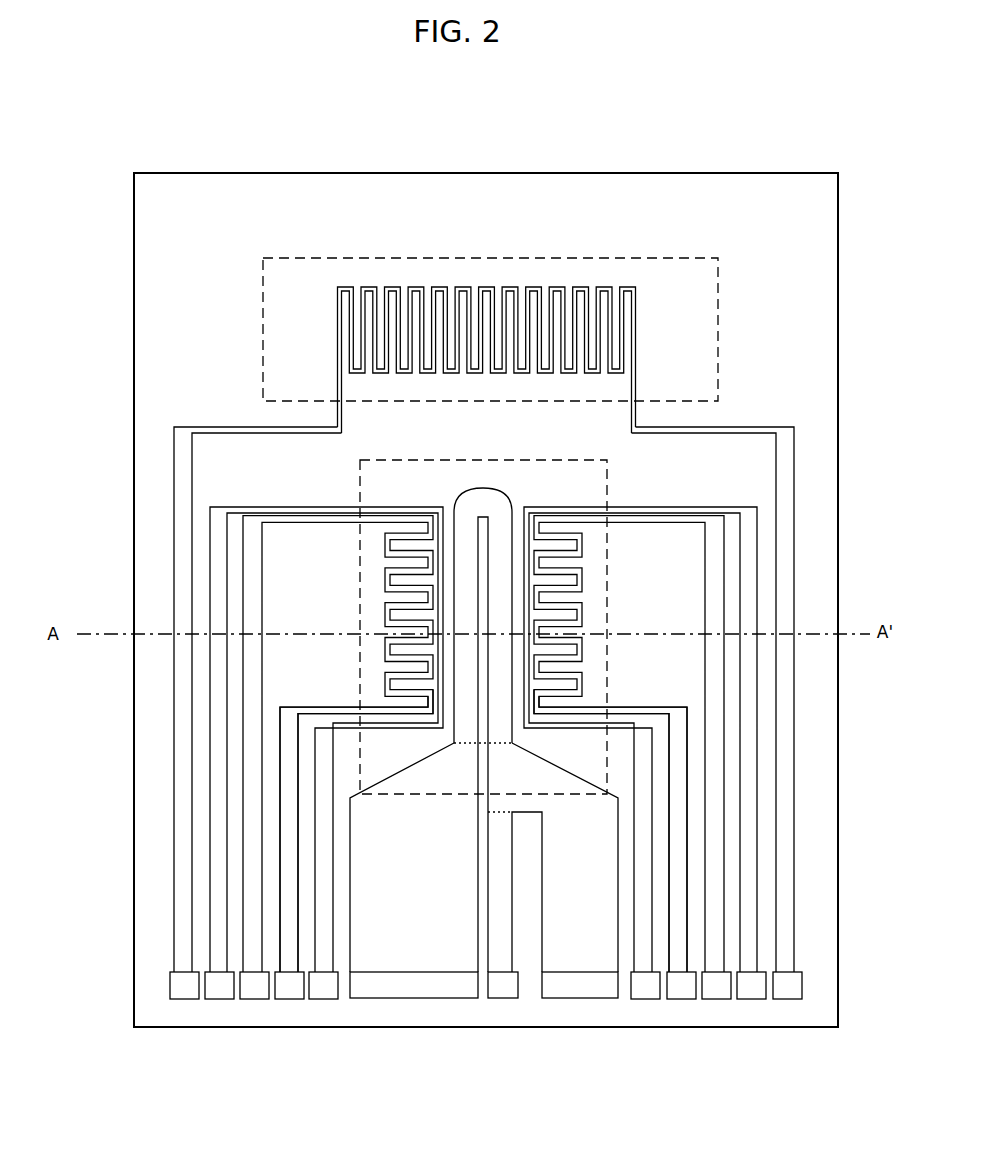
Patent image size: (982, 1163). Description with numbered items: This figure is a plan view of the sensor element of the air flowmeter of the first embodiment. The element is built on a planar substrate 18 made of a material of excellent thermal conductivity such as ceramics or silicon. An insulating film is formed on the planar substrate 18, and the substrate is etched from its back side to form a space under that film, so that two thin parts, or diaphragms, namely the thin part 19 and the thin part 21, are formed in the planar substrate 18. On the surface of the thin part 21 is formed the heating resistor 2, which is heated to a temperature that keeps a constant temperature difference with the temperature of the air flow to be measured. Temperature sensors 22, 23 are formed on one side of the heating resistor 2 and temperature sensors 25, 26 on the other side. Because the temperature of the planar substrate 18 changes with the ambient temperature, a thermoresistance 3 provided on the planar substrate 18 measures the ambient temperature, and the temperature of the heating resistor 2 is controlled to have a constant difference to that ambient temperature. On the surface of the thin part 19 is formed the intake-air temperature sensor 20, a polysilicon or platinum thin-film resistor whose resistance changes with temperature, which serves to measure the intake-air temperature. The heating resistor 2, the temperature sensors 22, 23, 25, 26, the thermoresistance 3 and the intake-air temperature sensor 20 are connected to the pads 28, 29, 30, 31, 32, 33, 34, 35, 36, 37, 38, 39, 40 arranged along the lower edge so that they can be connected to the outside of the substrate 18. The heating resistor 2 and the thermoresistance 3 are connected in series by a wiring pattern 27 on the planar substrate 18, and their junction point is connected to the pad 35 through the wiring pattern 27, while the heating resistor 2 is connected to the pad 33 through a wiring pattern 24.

The heating resistor 2 is at (500, 533).
The thermoresistance 3 is at (502, 925).
The planar substrate 18 is at (133, 235).
The thin part 19 is at (263, 292).
The intake-air temperature sensor 20 is at (472, 290).
The thin part 21 is at (360, 489).
The temperature sensor 22 is at (392, 636).
The temperature sensor 23 is at (390, 695).
The wiring pattern 24 is at (427, 885).
The temperature sensor 25 is at (575, 628).
The temperature sensor 26 is at (580, 690).
The wiring pattern 27 is at (575, 840).
The pad 28 is at (187, 990).
The pad 29 is at (223, 990).
The pad 30 is at (258, 990).
The pad 31 is at (293, 990).
The pad 32 is at (327, 990).
The pad 33 is at (413, 988).
The pad 34 is at (503, 988).
The pad 35 is at (580, 988).
The pad 36 is at (648, 990).
The pad 37 is at (684, 990).
The pad 38 is at (719, 990).
The pad 39 is at (754, 990).
The pad 40 is at (790, 990).